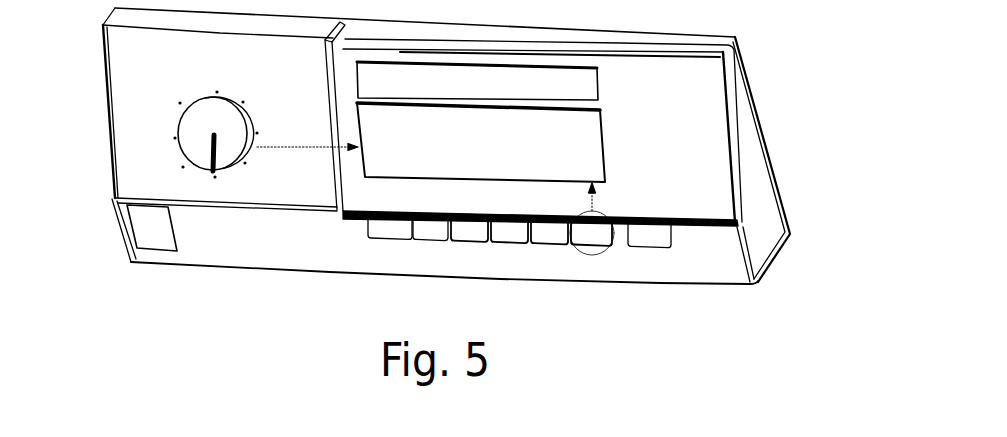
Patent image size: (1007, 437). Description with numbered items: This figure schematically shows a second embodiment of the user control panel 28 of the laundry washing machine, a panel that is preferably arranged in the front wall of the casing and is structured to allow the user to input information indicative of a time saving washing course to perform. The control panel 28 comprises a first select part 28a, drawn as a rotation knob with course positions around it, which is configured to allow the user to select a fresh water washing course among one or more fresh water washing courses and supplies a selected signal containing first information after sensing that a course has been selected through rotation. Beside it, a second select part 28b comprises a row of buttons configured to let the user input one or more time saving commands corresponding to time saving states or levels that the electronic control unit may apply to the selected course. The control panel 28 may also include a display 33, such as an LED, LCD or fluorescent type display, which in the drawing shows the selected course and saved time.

The user control panel 28 is at (208, 248).
The first select part 28a is at (190, 97).
The second select part 28b is at (505, 251).
The display 33 is at (613, 147).